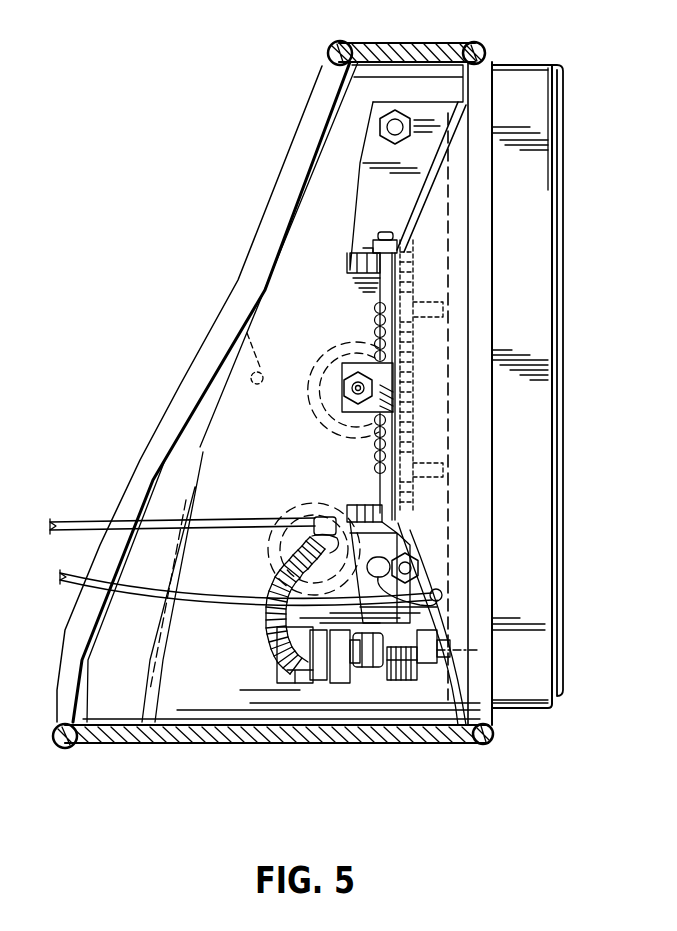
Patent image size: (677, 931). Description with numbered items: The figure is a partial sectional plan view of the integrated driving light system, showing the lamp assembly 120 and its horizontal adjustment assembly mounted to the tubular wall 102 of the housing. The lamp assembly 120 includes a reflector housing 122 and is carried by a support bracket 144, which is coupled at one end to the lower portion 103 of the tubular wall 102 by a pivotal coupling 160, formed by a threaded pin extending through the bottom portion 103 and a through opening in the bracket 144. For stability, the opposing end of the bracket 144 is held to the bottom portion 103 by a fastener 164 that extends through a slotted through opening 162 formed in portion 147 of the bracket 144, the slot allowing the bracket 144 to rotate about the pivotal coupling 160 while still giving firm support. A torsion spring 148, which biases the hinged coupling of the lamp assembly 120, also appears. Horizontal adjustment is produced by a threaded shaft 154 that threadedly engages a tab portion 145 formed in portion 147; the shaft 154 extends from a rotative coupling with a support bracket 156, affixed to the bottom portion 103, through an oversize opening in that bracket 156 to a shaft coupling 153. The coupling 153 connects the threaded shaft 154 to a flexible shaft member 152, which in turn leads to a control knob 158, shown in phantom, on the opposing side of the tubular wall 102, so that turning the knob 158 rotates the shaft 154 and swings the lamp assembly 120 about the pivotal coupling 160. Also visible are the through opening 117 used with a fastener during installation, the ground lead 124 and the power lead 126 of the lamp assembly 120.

The tubular wall 102 is at (172, 744).
The lower portion of tubular wall 103 is at (323, 193).
The through opening 117 is at (245, 332).
The lamp assembly 120 is at (574, 238).
The reflector housing 122 is at (458, 150).
The ground lead 124 is at (66, 520).
The power lead 126 is at (63, 578).
The support bracket 144 is at (373, 178).
The tab portion 145 is at (435, 675).
The portion of bracket 147 is at (445, 608).
The torsion spring 148 is at (373, 305).
The flexible shaft member 152 is at (262, 626).
The shaft coupling 153 is at (327, 678).
The threaded shaft 154 is at (407, 672).
The support bracket 156 is at (333, 680).
The control knob 158 is at (341, 506).
The pivotal coupling 160 is at (395, 122).
The slotted through opening 162 is at (442, 603).
The fastener 164 is at (420, 580).